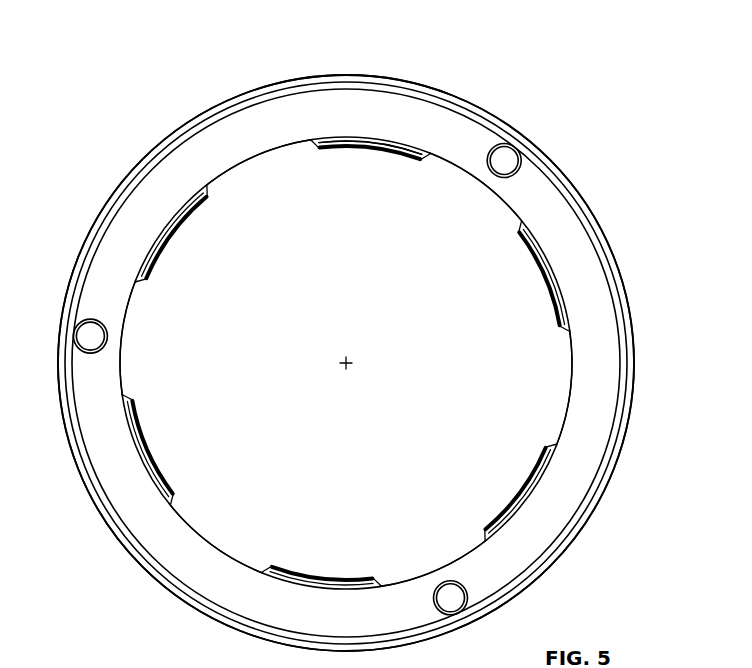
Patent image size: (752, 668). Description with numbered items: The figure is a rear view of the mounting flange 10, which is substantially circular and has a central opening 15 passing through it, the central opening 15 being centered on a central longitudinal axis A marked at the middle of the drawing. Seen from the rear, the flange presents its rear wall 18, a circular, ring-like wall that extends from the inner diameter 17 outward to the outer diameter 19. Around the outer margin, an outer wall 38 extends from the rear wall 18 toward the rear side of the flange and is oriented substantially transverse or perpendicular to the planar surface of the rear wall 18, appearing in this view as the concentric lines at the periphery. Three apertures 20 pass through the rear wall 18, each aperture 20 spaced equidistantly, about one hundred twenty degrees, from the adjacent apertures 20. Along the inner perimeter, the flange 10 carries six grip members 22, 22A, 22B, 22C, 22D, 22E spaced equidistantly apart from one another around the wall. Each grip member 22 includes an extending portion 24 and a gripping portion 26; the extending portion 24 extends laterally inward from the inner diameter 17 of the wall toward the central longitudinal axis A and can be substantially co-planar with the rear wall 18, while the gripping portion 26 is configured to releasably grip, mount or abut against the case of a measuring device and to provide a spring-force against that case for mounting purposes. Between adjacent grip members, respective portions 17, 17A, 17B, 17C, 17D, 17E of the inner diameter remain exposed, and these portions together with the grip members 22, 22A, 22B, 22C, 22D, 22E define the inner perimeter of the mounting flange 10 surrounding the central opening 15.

The mounting flange 10 is at (226, 56).
The central opening 15 is at (386, 304).
The inner diameter 17 is at (470, 180).
The inner diameter portion 17A is at (270, 153).
The inner diameter portion 17B is at (125, 332).
The inner diameter portion 17C is at (208, 537).
The inner diameter portion 17D is at (442, 563).
The inner diameter portion 17E is at (566, 386).
The rear wall 18 is at (597, 412).
The outer diameter 19 is at (108, 534).
The aperture 20 is at (505, 162).
The grip member 22 is at (540, 276).
The grip member 22A is at (343, 148).
The grip member 22B is at (176, 235).
The grip member 22C is at (153, 452).
The grip member 22D is at (306, 572).
The grip member 22E is at (522, 487).
The extending portion 24 is at (422, 150).
The gripping portion 26 is at (389, 147).
The outer wall 38 is at (633, 328).
The central longitudinal axis A is at (342, 356).